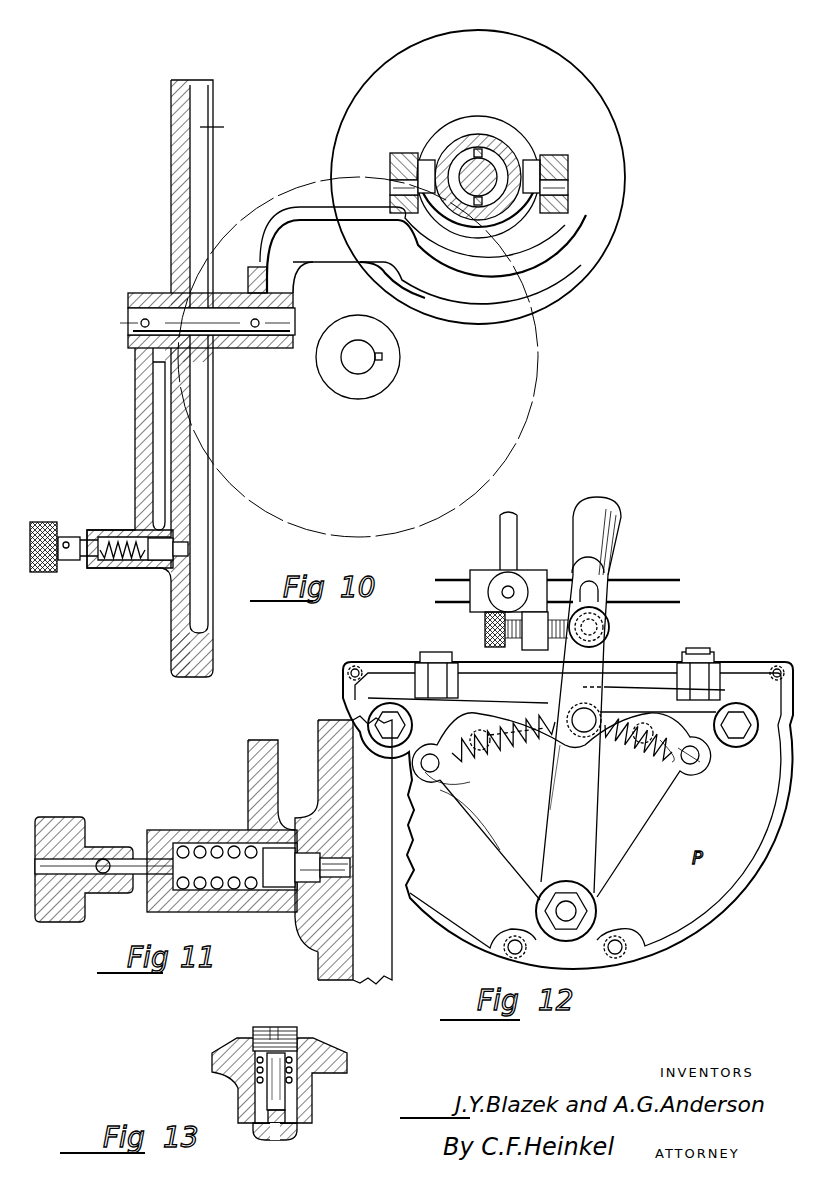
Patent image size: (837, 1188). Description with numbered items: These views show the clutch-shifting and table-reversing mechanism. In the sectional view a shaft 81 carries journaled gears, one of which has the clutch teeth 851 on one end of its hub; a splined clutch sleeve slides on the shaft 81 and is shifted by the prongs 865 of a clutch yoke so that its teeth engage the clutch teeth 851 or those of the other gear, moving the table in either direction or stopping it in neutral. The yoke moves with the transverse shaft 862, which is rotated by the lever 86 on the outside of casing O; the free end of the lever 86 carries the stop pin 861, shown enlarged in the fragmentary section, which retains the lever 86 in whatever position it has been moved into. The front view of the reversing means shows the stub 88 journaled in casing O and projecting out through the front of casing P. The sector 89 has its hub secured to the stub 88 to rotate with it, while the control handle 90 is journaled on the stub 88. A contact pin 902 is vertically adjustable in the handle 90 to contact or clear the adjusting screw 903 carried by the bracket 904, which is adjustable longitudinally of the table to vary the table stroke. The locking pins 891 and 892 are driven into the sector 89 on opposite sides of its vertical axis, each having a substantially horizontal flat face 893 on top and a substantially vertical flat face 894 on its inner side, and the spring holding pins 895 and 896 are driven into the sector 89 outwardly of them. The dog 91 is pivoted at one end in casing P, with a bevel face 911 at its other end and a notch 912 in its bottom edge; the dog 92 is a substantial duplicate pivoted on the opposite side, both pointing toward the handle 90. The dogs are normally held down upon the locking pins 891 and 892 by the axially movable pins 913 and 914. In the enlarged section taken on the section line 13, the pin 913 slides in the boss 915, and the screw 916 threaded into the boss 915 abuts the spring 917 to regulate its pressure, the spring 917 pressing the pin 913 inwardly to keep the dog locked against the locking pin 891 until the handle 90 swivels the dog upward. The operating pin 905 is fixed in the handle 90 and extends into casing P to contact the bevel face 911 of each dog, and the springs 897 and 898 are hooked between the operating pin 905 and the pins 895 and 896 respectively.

In FIG. 12, the section line 13 is at (707, 652).
In FIG. 10, the shaft 81 is at (516, 152).
In FIG. 10, the lever 86 is at (136, 440).
In FIG. 11, the lever 86 is at (248, 780).
In FIG. 12, the stub 88 is at (598, 906).
In FIG. 12, the sector 89 is at (561, 806).
In FIG. 12, the control handle 90 is at (581, 695).
In FIG. 12, the dog 91 is at (484, 716).
In FIG. 12, the dog 92 is at (654, 705).
In FIG. 10, the clutch teeth 851 is at (475, 120).
In FIG. 10, the stop pin 861 is at (150, 566).
In FIG. 11, the stop pin 861 is at (300, 915).
In FIG. 10, the transverse shaft 862 is at (280, 325).
In FIG. 10, the prongs 865 is at (398, 152).
In FIG. 12, the locking pin 891 is at (482, 752).
In FIG. 12, the locking pin 892 is at (612, 737).
In FIG. 12, the flat face 893 is at (645, 723).
In FIG. 12, the flat face 894 is at (655, 725).
In FIG. 12, the spring holding pin 895 is at (460, 782).
In FIG. 12, the spring holding pin 896 is at (695, 760).
In FIG. 12, the spring 897 is at (500, 850).
In FIG. 12, the spring 898 is at (672, 762).
In FIG. 12, the contact pin 902 is at (611, 628).
In FIG. 12, the adjusting screw 903 is at (485, 625).
In FIG. 12, the bracket 904 is at (480, 568).
In FIG. 12, the operating pin 905 is at (593, 745).
In FIG. 12, the bevel face 911 is at (560, 705).
In FIG. 12, the notch 912 is at (430, 745).
In FIG. 12, the pin 913 is at (457, 675).
In FIG. 13, the pin 913 is at (298, 1135).
In FIG. 12, the pin 914 is at (722, 677).
In FIG. 13, the boss 915 is at (315, 1105).
In FIG. 13, the screw 916 is at (297, 1032).
In FIG. 13, the spring 917 is at (257, 1080).